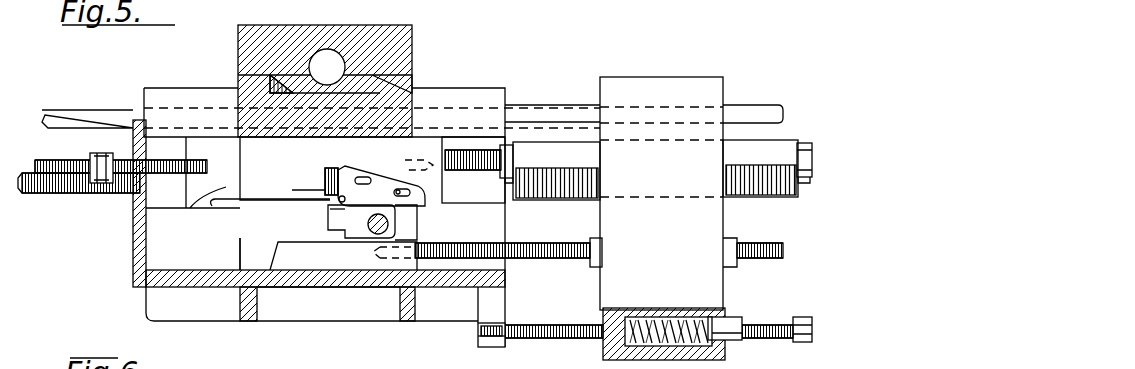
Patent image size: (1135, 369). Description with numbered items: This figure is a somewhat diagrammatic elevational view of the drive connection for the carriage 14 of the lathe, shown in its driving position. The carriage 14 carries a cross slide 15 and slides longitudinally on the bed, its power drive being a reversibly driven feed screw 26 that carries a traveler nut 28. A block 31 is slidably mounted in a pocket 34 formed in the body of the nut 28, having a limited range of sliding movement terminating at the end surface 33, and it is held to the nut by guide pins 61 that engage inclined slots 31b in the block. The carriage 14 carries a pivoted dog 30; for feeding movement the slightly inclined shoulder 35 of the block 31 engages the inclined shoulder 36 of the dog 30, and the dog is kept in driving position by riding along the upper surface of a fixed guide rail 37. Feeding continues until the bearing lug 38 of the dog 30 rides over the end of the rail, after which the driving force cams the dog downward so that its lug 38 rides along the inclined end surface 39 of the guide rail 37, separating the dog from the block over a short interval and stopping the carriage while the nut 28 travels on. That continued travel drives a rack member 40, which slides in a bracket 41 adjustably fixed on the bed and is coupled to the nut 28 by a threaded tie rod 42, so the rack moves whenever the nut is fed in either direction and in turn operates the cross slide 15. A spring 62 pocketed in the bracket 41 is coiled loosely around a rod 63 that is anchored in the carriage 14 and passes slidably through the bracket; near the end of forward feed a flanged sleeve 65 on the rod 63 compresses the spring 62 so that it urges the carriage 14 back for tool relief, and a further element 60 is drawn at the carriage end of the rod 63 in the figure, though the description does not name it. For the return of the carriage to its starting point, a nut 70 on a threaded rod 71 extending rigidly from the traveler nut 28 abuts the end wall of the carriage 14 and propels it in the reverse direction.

The carriage 14 is at (106, 311).
The cross slide 15 is at (350, 81).
The guide pins 61 is at (327, 67).
The bracket 41 is at (712, 86).
The rack member 40 is at (546, 198).
The threaded tie rod 42 is at (475, 170).
The threaded rod 71 is at (46, 162).
The feed screw 26 is at (73, 195).
The nut 70 is at (111, 158).
The inclined end surface 39 is at (262, 254).
The traveler nut 28 is at (203, 215).
The end surface 33 is at (295, 188).
The pocket 34 is at (345, 161).
The block 31 is at (378, 176).
The slots 31b is at (413, 196).
The inclined shoulder 35 is at (346, 198).
The pivoted dog 30 is at (330, 231).
The inclined shoulder 36 is at (342, 211).
The bearing lug 38 is at (330, 246).
The guide rail 37 is at (357, 262).
The rod 63 is at (567, 340).
The nut 60 is at (496, 347).
The spring 62 is at (642, 346).
The flanged sleeve 65 is at (741, 323).